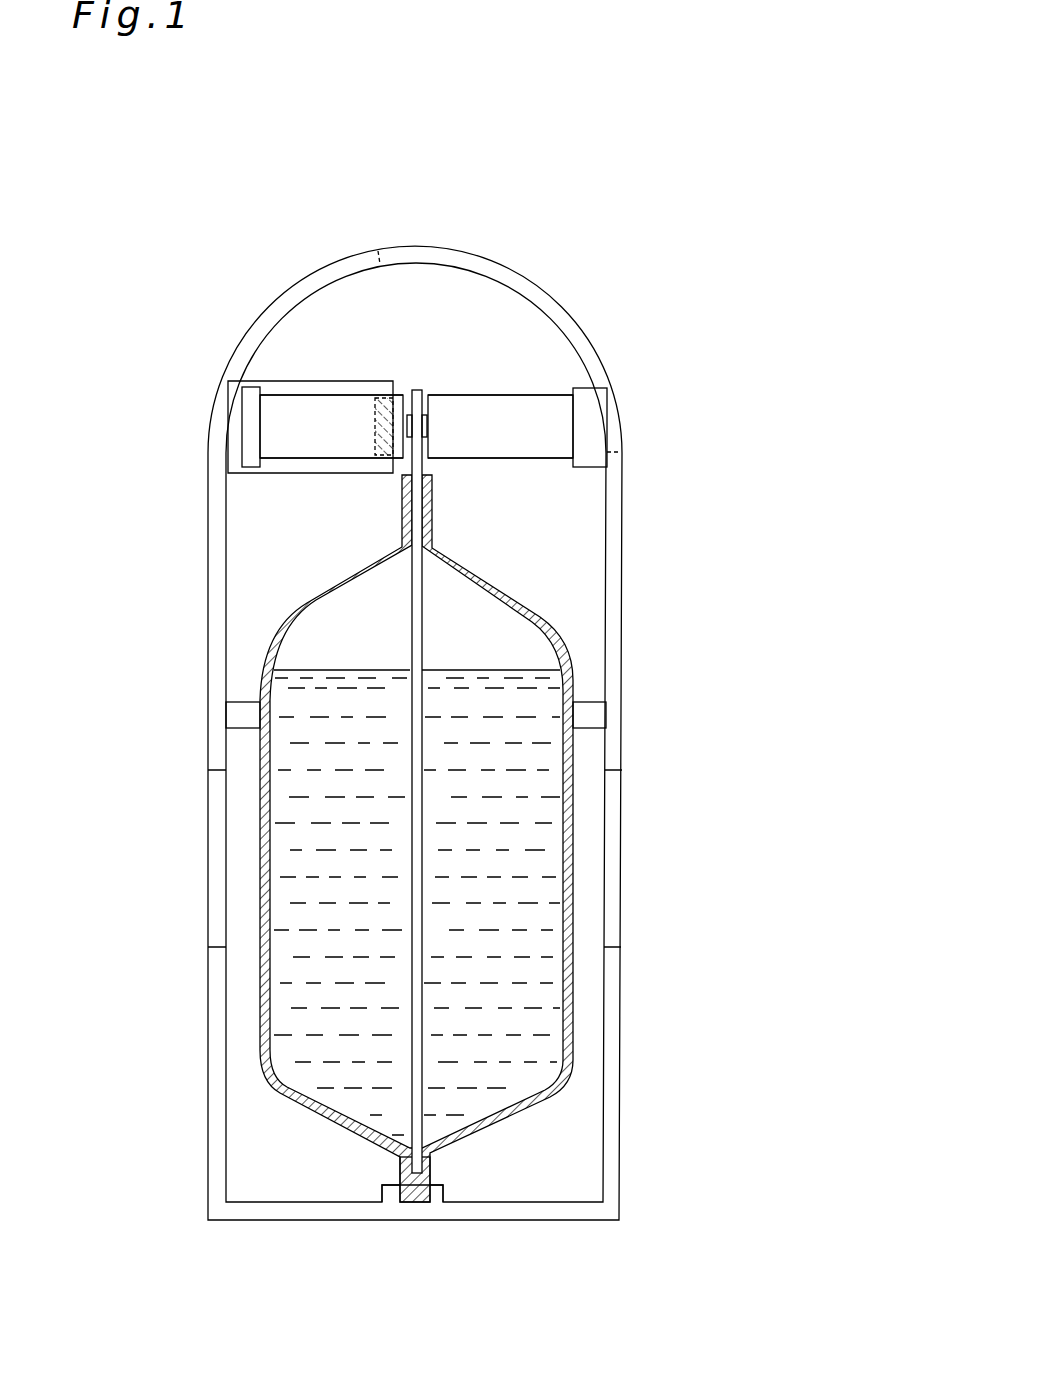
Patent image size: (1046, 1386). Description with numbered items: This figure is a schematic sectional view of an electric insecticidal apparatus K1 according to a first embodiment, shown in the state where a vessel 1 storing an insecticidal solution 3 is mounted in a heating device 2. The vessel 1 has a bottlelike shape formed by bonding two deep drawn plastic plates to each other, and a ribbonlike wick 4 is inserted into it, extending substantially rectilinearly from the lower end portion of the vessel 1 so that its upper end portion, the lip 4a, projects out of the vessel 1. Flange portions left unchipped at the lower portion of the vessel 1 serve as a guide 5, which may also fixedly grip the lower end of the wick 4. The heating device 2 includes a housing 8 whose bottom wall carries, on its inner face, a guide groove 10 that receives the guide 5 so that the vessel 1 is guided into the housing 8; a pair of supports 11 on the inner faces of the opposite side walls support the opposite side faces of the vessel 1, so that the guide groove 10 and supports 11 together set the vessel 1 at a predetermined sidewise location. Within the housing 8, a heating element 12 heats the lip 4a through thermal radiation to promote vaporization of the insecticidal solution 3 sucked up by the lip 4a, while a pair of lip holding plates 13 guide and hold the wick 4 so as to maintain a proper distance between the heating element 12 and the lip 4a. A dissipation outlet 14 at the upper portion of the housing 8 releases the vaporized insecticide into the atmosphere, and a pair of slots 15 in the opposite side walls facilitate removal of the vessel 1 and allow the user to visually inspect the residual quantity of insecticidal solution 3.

The electric insecticidal apparatus K1 is at (730, 561).
The vessel 1 is at (246, 626).
The heating device 2 is at (202, 314).
The insecticidal solution 3 is at (335, 1020).
The wick 4 is at (422, 627).
The lip 4a is at (432, 404).
The guide 5 is at (428, 1163).
The housing 8 is at (210, 458).
The guide groove 10 is at (412, 1203).
The supports 11 is at (242, 700).
The heating element 12 is at (380, 412).
The lip holding plates 13 is at (323, 447).
The dissipation outlet 14 is at (507, 280).
The slots 15 is at (218, 848).